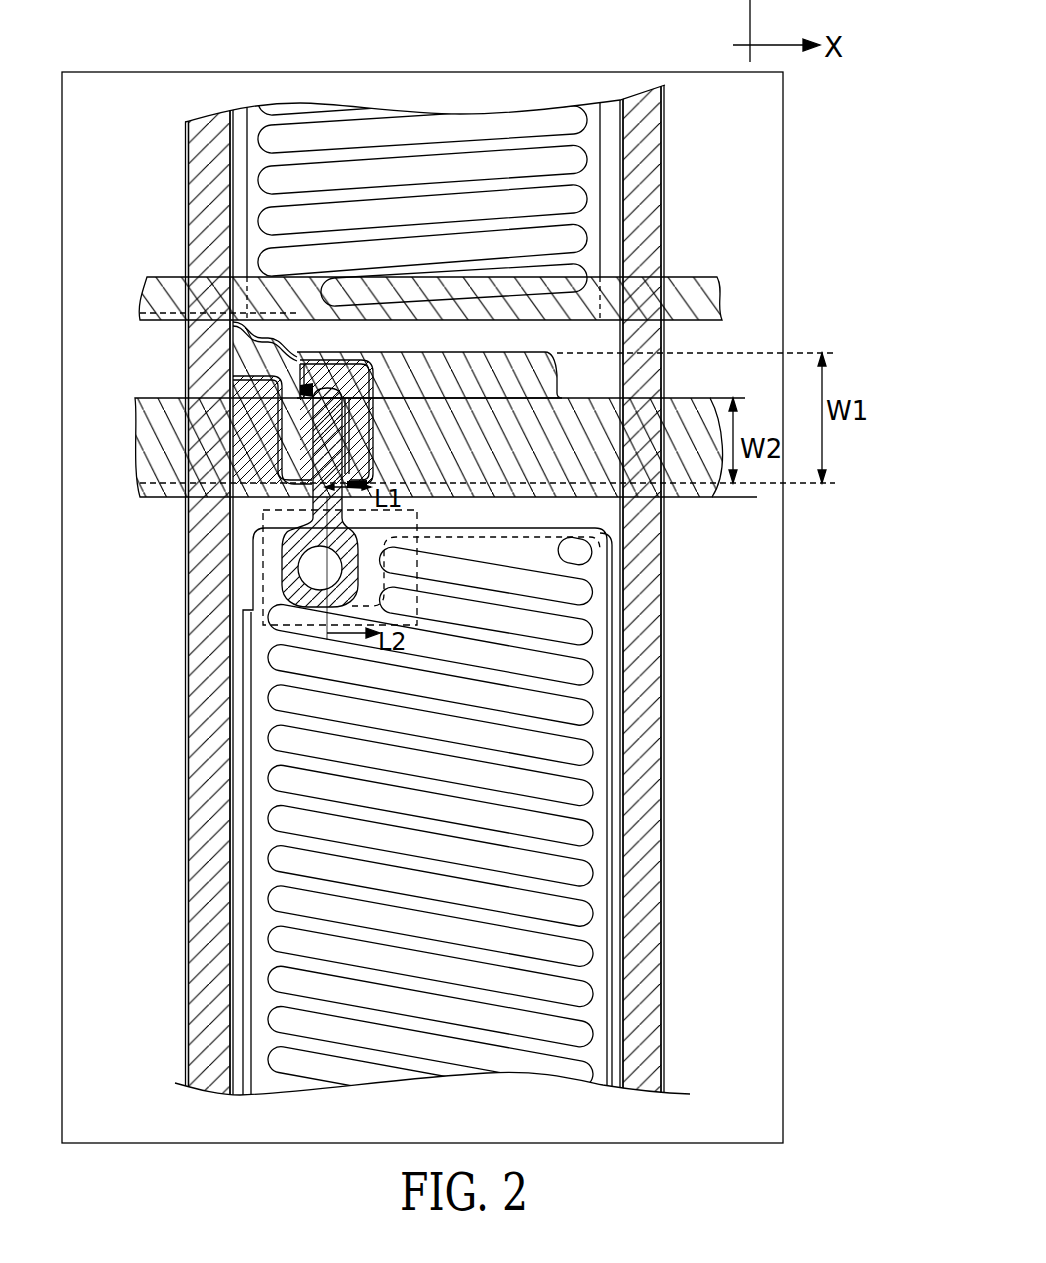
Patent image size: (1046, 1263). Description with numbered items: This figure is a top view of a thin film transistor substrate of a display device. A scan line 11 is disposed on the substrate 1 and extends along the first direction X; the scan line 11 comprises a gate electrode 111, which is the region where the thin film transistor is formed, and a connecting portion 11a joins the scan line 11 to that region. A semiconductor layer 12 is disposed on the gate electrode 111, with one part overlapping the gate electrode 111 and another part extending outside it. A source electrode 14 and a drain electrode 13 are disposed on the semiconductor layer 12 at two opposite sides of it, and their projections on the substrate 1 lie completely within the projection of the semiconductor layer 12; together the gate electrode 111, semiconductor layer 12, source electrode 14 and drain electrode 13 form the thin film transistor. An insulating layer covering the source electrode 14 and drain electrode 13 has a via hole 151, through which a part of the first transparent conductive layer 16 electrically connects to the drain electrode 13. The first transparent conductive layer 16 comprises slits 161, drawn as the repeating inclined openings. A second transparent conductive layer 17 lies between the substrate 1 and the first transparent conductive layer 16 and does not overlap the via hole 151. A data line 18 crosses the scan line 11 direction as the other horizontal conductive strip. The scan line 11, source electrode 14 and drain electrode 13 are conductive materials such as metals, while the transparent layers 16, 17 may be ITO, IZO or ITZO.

The substrate 1 is at (783, 630).
The scan line 11 is at (697, 497).
The connecting portion of scan line 11a is at (262, 347).
The gate electrode 111 is at (305, 390).
The semiconductor layer 12 is at (294, 475).
The drain electrode 13 is at (283, 590).
The source electrode 14 is at (288, 452).
The via hole 151 is at (300, 570).
The first transparent conductive layer 16 is at (574, 530).
The slit 161 is at (570, 712).
The second transparent conductive layer 17 is at (605, 530).
The data line 18 is at (718, 298).